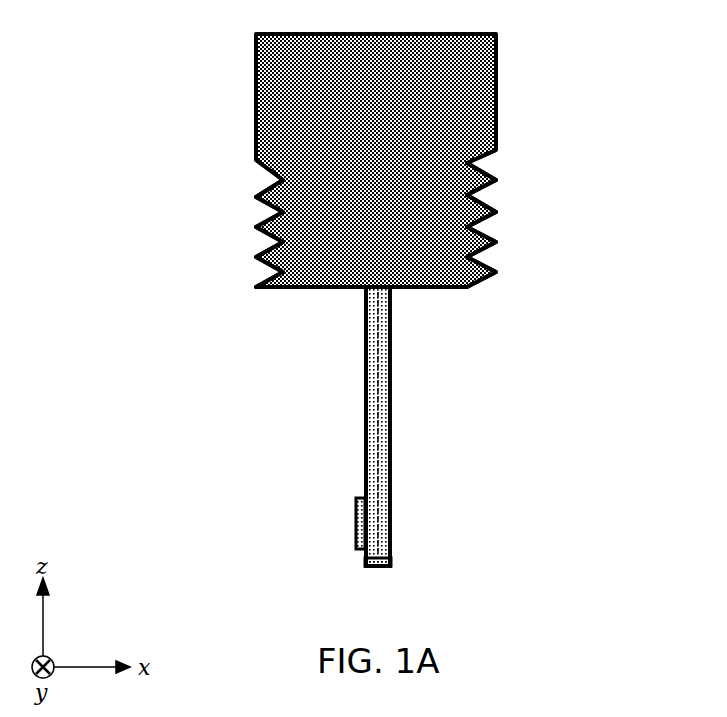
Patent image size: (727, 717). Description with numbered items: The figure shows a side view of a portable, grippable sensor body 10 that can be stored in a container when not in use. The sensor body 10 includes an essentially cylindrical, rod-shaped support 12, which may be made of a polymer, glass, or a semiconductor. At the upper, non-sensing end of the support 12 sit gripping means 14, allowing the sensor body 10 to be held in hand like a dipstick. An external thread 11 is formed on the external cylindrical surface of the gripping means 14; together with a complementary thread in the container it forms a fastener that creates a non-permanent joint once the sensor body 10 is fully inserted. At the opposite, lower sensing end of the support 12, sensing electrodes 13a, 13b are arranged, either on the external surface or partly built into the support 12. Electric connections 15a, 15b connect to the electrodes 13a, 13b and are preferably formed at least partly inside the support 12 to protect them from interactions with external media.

The sensor body 10 is at (411, 323).
The thread 11 is at (258, 207).
The support 12 is at (363, 408).
The sensing electrode 13a is at (355, 513).
The sensing electrode 13b is at (380, 568).
The gripping means 14 is at (497, 90).
The electric connection 15a is at (363, 343).
The electric connection 15b is at (392, 474).